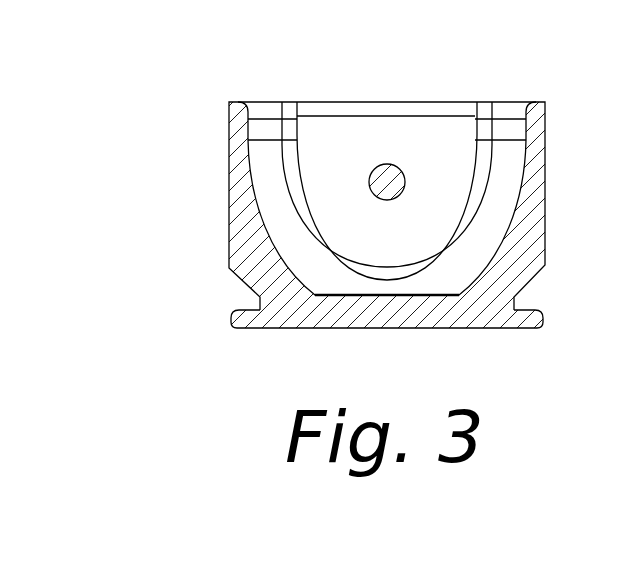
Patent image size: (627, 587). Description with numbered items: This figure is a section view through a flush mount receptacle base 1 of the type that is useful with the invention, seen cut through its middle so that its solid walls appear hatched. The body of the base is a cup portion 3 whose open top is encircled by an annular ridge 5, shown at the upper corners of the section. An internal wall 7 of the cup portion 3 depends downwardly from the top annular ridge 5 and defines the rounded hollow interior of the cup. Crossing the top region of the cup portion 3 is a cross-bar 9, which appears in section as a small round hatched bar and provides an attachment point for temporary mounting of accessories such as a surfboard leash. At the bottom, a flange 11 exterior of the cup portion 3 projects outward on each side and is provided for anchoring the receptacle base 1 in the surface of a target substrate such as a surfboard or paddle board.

The flush mount receptacle base 1 is at (258, 102).
The cup portion 3 is at (229, 231).
The annular ridge 5 is at (545, 123).
The internal wall 7 is at (418, 166).
The cross-bar 9 is at (369, 177).
The flange 11 is at (234, 311).